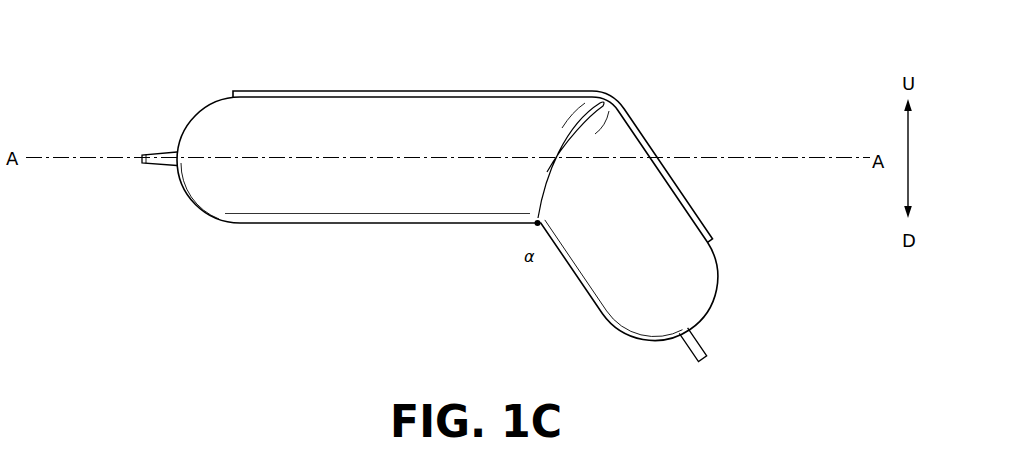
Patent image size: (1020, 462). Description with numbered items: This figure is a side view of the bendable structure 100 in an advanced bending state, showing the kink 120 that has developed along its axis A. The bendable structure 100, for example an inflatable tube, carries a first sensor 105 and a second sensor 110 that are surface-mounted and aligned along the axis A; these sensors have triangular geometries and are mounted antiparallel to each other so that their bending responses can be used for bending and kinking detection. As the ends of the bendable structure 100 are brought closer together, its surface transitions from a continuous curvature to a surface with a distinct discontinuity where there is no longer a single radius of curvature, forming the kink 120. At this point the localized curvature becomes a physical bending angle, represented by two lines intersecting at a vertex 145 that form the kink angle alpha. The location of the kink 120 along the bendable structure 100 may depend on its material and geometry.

The bendable structure 100 is at (198, 209).
The first sensor 105 is at (473, 149).
The second sensor 110 is at (298, 91).
The kink 120 is at (553, 118).
The vertex 145 is at (537, 223).